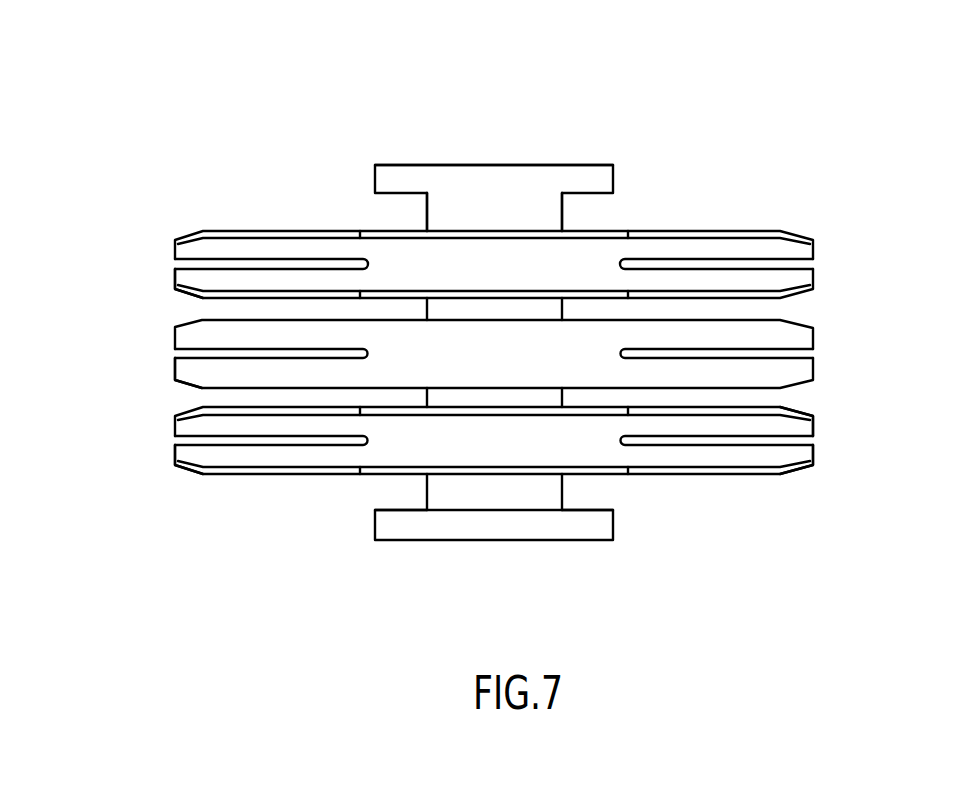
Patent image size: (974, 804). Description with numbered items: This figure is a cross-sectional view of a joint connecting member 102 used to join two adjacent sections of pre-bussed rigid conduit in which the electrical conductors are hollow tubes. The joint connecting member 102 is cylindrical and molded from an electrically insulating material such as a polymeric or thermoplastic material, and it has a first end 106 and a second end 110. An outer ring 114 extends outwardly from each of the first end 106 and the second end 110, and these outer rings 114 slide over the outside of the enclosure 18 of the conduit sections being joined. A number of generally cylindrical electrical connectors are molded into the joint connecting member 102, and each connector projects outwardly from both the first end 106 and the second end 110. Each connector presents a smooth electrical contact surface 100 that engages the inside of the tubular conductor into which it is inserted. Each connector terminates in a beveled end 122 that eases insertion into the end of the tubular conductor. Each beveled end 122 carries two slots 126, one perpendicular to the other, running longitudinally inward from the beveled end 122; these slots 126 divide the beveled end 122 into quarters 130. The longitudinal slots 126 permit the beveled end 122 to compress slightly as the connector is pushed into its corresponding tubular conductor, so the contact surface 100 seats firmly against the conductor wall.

The joint connecting member 102 is at (496, 160).
The outer ring 114 is at (374, 168).
The first end 106 is at (426, 224).
The second end 110 is at (563, 220).
The electrical contact surface 100 is at (247, 300).
The enclosure 18 is at (177, 432).
The beveled end 122 is at (185, 468).
The slots 126 is at (813, 270).
The quarters 130 is at (783, 462).